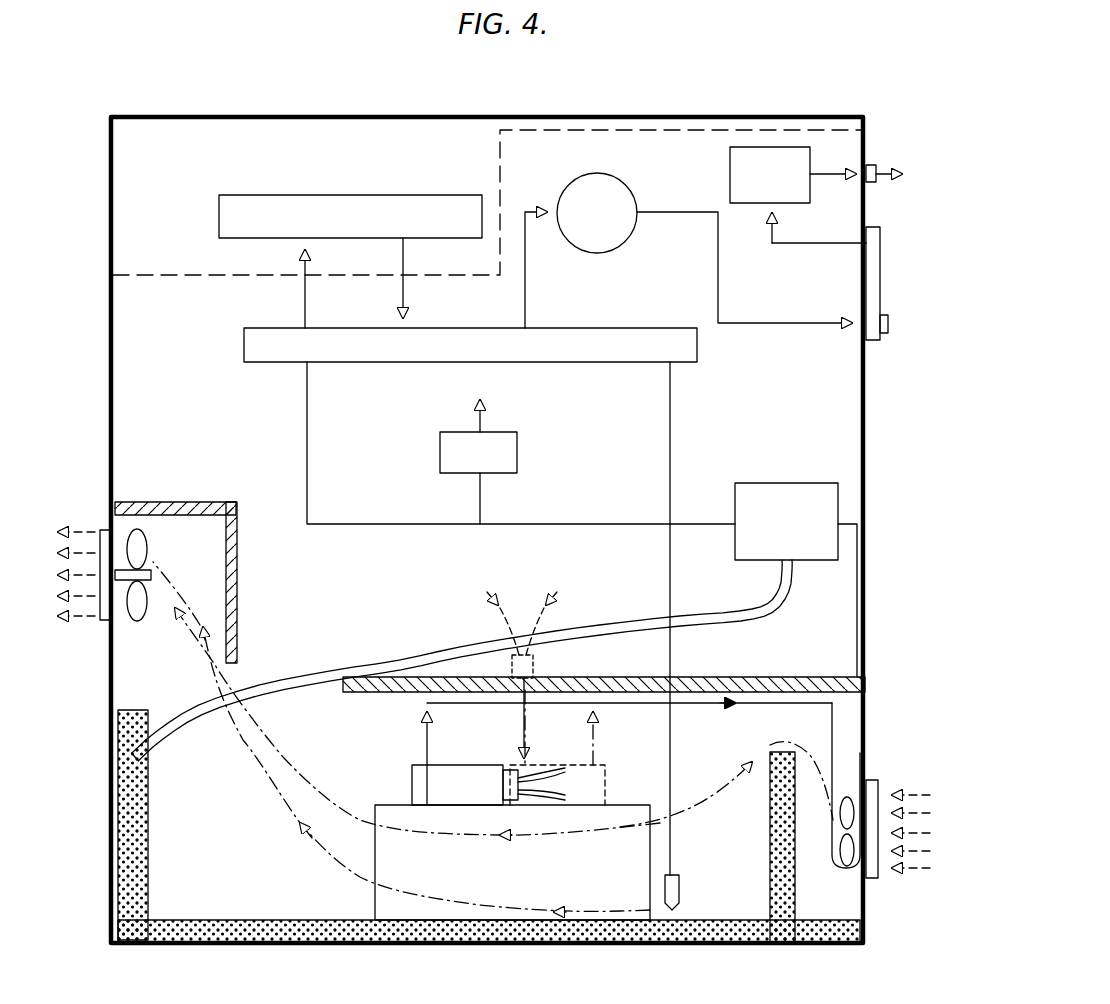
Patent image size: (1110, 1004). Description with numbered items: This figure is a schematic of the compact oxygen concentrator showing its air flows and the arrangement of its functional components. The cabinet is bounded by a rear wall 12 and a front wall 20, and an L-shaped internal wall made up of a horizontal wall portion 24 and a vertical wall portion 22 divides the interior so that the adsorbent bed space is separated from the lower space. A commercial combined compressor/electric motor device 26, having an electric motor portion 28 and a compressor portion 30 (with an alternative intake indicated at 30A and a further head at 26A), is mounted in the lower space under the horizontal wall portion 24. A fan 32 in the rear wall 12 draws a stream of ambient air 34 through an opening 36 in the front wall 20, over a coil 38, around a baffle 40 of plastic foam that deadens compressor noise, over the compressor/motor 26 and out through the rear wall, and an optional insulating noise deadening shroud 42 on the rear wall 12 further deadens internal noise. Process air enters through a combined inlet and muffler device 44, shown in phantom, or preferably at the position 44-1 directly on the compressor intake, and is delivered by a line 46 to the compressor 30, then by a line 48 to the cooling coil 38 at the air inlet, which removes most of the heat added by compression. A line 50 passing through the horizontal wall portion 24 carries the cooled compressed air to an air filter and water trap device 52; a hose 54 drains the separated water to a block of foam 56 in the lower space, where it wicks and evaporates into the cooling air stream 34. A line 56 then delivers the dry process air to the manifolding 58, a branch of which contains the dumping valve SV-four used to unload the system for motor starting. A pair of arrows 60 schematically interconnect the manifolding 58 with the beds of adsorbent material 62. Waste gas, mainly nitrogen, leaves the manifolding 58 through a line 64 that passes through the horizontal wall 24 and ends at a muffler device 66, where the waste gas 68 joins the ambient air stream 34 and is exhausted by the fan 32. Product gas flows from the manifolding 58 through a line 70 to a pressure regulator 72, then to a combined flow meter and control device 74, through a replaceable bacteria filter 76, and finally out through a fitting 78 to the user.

The rear wall 12 is at (110, 300).
The front wall 20 is at (866, 461).
The vertical wall portion 22 is at (205, 268).
The horizontal wall portion 24 is at (766, 677).
The compressor/electric motor device 26 is at (514, 755).
The air line 26A is at (404, 800).
The electric motor portion 28 is at (390, 818).
The compressor portion 30 is at (590, 765).
The compressor intake 30A is at (450, 765).
The fan 32 is at (138, 524).
The stream of ambient air 34 is at (283, 760).
The opening 36 is at (876, 878).
The coil 38 is at (846, 868).
The baffle 40 is at (795, 875).
The insulating noise deadening shroud 42 is at (205, 502).
The combined inlet and muffler device 44 is at (543, 665).
The preferred inlet device position 44-1 is at (512, 792).
The line 46 is at (530, 718).
The line 48 is at (656, 706).
The line 50 is at (858, 631).
The air filter and water trap device 52 is at (808, 483).
The hose 54 is at (630, 620).
The block of foam / line 56 is at (597, 524).
The manifolding 58 is at (244, 347).
The pair of arrows 60 is at (403, 292).
The beds of adsorbent material 62 is at (380, 195).
The line 64 is at (670, 474).
The muffler device 66 is at (680, 884).
The waste gas 68 is at (300, 850).
The line 70 is at (525, 297).
The pressure regulator 72 is at (620, 186).
The combined flow meter and control device 74 is at (880, 240).
The bacteria filter 76 is at (756, 147).
The fitting 78 is at (870, 165).